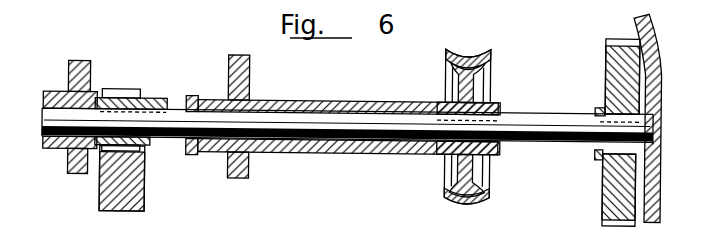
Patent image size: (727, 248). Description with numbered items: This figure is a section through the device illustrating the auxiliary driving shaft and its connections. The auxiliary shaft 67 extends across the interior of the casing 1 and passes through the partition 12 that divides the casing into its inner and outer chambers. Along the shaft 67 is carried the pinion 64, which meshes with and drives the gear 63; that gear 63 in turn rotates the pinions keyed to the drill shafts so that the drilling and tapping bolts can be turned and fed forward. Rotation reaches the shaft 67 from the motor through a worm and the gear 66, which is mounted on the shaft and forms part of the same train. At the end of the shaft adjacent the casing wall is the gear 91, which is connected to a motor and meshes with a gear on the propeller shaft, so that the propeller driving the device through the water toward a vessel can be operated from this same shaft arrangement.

The casing 1 is at (70, 162).
The partition 12 is at (247, 167).
The gear 63 is at (125, 185).
The pinion 64 is at (137, 97).
The gear 66 is at (487, 60).
The shaft 67 is at (387, 122).
The gear 91 is at (610, 73).